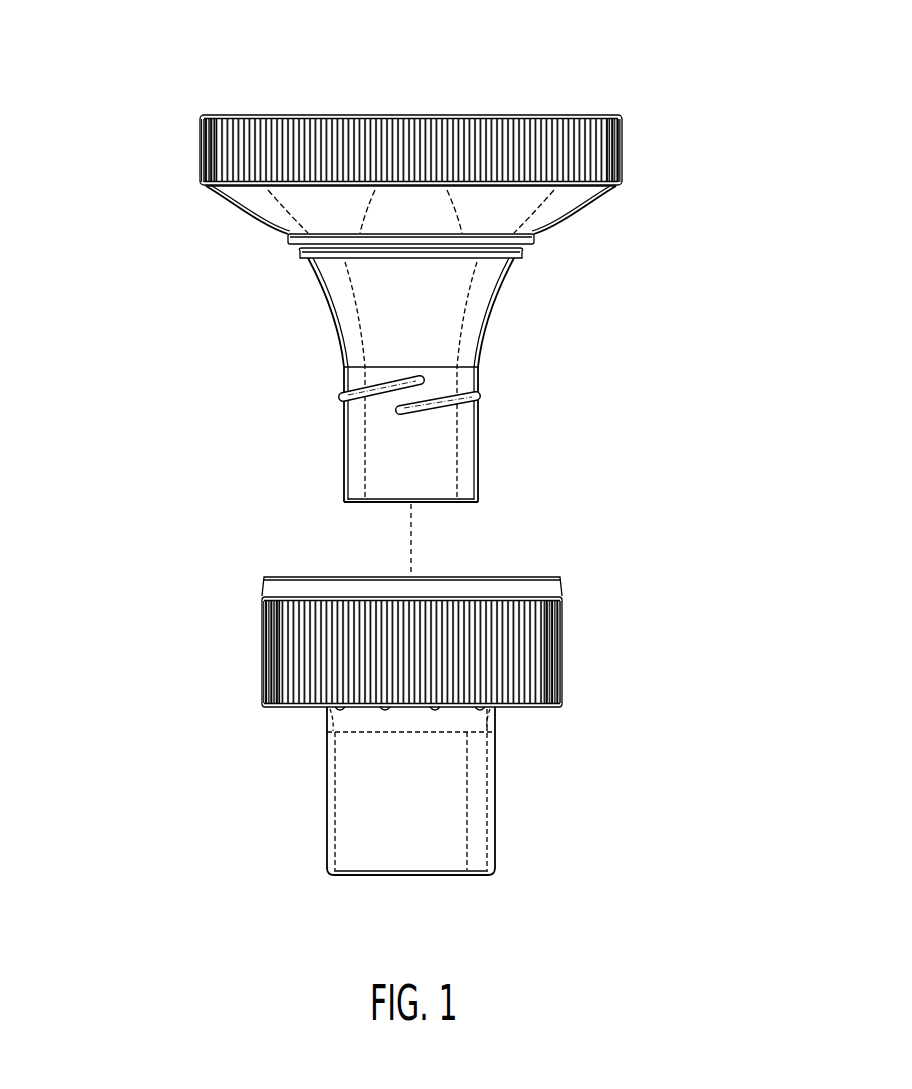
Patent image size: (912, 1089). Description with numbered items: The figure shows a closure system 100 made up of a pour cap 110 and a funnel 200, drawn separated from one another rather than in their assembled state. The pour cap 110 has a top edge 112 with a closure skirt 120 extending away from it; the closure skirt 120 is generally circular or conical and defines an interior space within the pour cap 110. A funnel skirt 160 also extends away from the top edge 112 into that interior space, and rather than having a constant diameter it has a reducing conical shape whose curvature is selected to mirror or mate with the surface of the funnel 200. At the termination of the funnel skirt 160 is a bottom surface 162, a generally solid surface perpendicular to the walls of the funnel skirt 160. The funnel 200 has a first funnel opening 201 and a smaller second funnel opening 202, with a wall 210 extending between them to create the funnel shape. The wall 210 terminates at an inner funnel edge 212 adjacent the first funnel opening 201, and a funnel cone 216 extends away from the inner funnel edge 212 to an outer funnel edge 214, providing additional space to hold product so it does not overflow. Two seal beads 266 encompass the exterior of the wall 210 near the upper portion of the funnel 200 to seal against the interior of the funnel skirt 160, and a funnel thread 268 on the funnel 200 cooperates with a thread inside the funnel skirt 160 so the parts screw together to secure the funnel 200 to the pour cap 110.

The closure system 100 is at (260, 54).
The first funnel opening 201 is at (391, 269).
The funnel 200 is at (654, 211).
The outer funnel edge 214 is at (342, 119).
The funnel cone 216 is at (230, 152).
The inner funnel edge 212 is at (183, 179).
The seal bead 266 is at (522, 252).
The wall 210 is at (370, 318).
The funnel thread 268 is at (474, 390).
The second funnel opening 202 is at (456, 508).
The top edge 112 is at (241, 575).
The closure skirt 120 is at (300, 645).
The pour cap 110 is at (345, 723).
The funnel skirt 160 is at (447, 780).
The bottom surface 162 is at (433, 886).